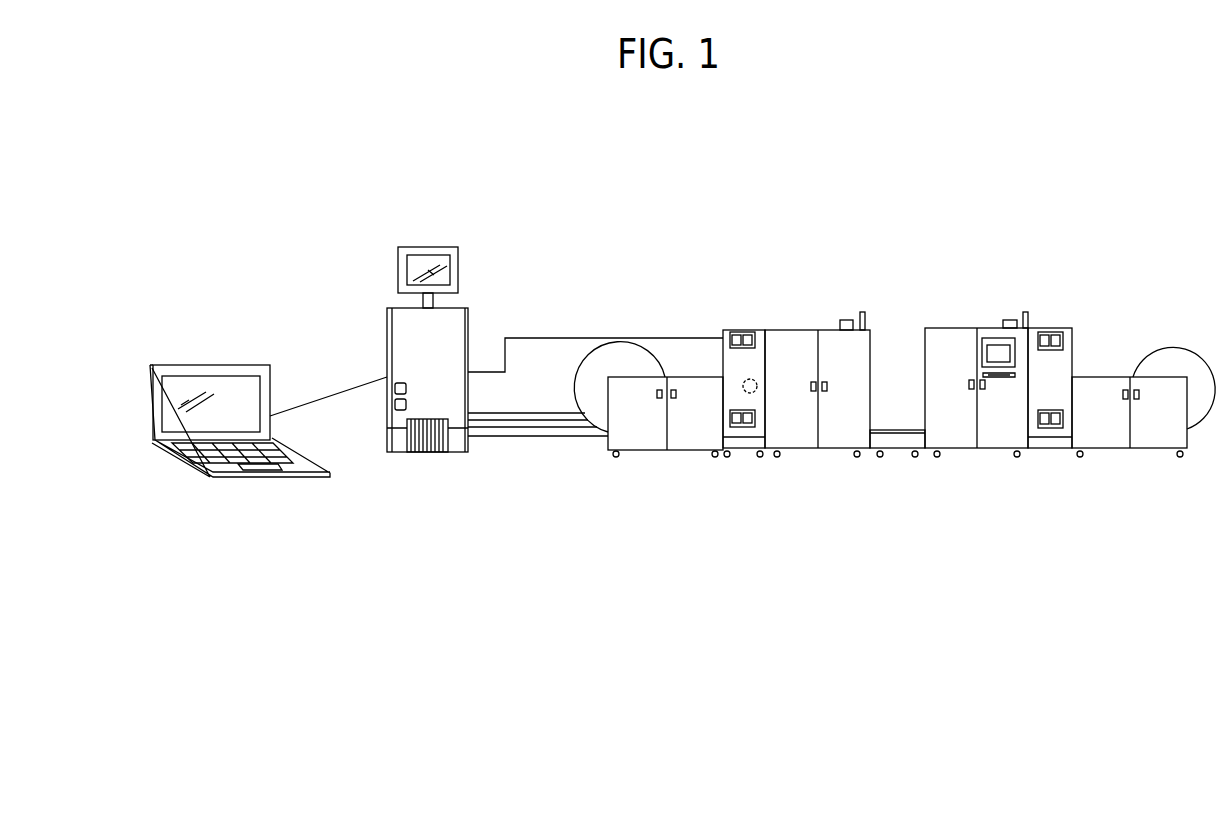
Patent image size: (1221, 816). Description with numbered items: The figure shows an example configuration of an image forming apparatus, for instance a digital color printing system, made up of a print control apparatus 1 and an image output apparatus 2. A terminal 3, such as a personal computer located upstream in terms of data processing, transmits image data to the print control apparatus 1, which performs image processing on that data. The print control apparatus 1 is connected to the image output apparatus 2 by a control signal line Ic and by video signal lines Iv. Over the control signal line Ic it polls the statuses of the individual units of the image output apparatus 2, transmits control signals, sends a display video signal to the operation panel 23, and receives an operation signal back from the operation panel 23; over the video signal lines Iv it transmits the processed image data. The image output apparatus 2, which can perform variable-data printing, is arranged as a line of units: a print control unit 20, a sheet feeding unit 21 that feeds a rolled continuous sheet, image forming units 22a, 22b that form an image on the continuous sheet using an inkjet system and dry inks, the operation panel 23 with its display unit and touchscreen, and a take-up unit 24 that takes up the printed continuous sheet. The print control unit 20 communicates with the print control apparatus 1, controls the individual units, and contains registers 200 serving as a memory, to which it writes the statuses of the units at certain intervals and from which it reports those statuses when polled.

The print control apparatus 1 is at (393, 307).
The image output apparatus 2 is at (928, 200).
The terminal 3 is at (213, 365).
The print control unit 20 is at (745, 330).
The sheet feeding unit 21 is at (622, 342).
The image forming unit 22a is at (790, 330).
The image forming unit 22b is at (953, 328).
The operation panel 23 is at (995, 338).
The take-up unit 24 is at (1178, 347).
The registers 200 is at (753, 394).
The control signal line Ic is at (532, 338).
The video signal lines Iv is at (533, 440).